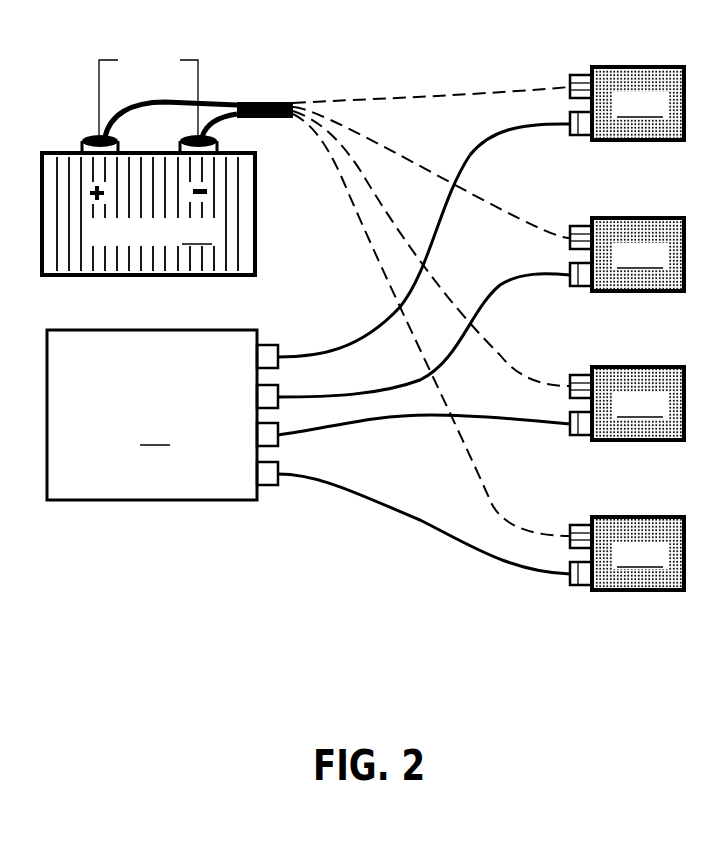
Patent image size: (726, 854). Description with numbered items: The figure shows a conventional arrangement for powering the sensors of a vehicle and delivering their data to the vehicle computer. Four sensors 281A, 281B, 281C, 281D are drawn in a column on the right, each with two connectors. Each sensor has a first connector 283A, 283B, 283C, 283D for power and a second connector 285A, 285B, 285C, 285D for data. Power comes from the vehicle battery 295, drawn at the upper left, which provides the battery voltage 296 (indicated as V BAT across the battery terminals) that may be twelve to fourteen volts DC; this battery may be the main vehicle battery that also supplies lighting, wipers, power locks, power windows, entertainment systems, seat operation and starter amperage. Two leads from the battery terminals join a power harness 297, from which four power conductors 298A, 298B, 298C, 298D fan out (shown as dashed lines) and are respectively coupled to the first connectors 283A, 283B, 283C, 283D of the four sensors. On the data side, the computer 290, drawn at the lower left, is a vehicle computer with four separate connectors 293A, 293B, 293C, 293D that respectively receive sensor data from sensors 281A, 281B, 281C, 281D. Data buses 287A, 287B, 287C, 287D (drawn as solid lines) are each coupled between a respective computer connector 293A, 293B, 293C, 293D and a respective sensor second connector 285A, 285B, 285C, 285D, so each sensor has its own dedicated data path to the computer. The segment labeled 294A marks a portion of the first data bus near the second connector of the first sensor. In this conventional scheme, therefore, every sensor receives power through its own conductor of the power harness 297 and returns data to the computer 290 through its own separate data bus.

The sensor 281A is at (638, 103).
The sensor 281B is at (638, 254).
The sensor 281C is at (638, 403).
The sensor 281D is at (638, 553).
The first connector 283A is at (577, 75).
The first connector 283B is at (577, 226).
The first connector 283C is at (577, 375).
The first connector 283D is at (577, 525).
The second connector 285A is at (577, 137).
The second connector 285B is at (577, 288).
The second connector 285C is at (577, 437).
The second connector 285D is at (577, 587).
The data bus 287A is at (378, 330).
The data bus 287B is at (418, 383).
The data bus 287C is at (386, 418).
The data bus 287D is at (425, 523).
The computer 290 is at (152, 415).
The connector 293A is at (270, 345).
The connector 293B is at (280, 387).
The connector 293C is at (280, 425).
The connector 293D is at (270, 487).
The control cable segment 294A is at (477, 150).
The vehicle battery 295 is at (148, 205).
The battery voltage 296 is at (148, 55).
The power harness 297 is at (260, 102).
The power conductor 298A is at (383, 100).
The power conductor 298B is at (513, 223).
The power conductor 298C is at (498, 350).
The power conductor 298D is at (463, 463).